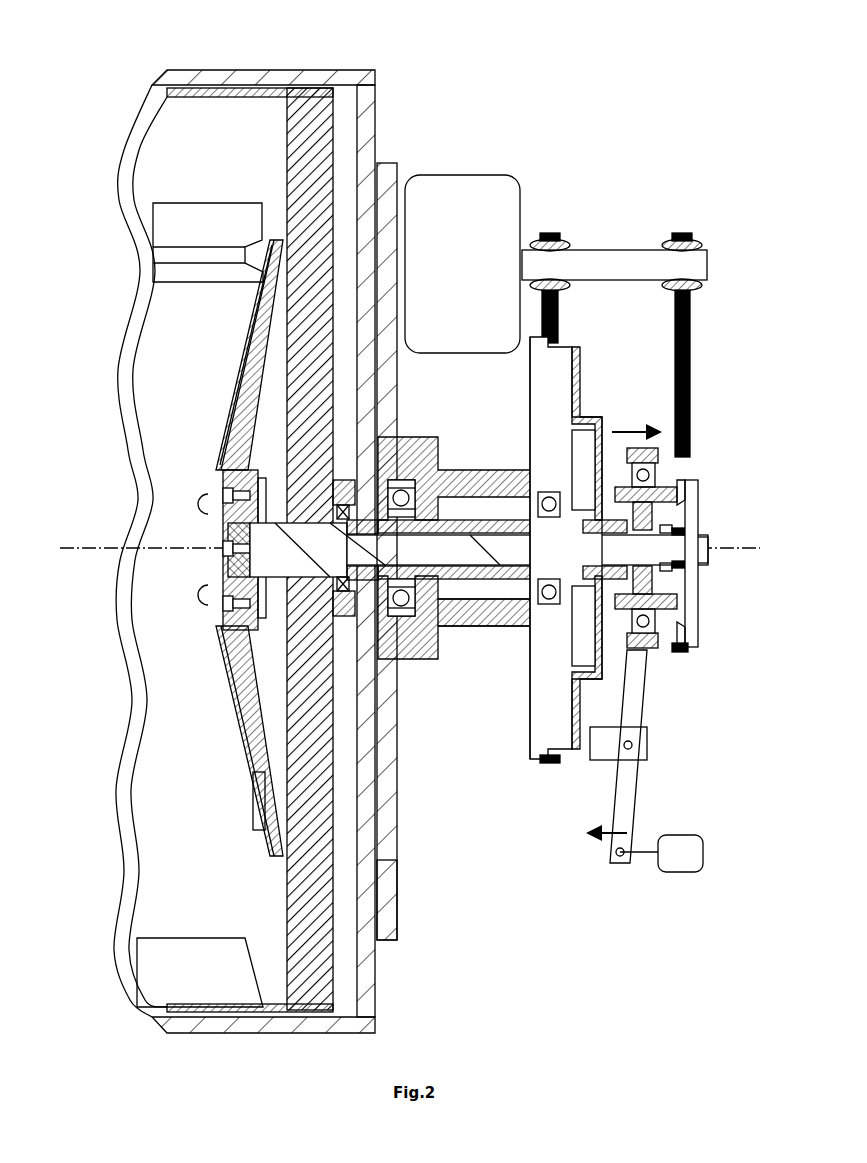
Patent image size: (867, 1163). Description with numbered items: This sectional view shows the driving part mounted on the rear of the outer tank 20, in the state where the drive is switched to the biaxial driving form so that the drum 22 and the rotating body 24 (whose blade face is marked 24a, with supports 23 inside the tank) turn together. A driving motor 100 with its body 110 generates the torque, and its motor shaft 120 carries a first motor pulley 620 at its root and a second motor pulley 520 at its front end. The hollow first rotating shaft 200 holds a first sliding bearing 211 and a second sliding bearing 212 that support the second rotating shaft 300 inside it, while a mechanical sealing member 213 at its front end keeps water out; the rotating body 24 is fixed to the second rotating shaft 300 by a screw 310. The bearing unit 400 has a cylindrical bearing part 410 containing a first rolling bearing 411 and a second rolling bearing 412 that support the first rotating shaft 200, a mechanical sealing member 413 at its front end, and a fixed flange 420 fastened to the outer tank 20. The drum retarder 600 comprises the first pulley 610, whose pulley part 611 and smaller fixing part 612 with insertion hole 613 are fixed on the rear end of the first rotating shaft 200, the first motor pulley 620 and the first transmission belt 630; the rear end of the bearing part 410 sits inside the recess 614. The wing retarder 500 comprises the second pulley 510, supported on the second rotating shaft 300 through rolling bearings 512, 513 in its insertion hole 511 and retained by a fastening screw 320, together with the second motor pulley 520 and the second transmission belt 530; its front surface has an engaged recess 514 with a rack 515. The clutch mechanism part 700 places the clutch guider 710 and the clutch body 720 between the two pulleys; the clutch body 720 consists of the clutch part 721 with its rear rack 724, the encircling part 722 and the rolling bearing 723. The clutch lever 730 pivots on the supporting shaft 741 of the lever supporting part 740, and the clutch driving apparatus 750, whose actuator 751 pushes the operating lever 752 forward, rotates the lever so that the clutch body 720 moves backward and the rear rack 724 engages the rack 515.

The outer tank 20 is at (322, 70).
The drum 22 is at (228, 88).
The support member 23 is at (212, 208).
The rotating body 24 is at (238, 345).
The blade plate 24a is at (232, 382).
The driving motor 100 is at (518, 170).
The motor 110 is at (458, 175).
The motor shaft 120 is at (612, 250).
The first rotating shaft 200 is at (285, 680).
The first sliding bearing 211 is at (343, 500).
The second sliding bearing 212 is at (522, 575).
The mechanical sealing member 213 is at (350, 500).
The second rotating shaft 300 is at (230, 625).
The screw 310 is at (222, 604).
The fastening screw 320 is at (708, 546).
The bearing unit 400 is at (390, 163).
The bearing part 410 is at (418, 448).
The first rolling bearing 411 is at (401, 608).
The second rolling bearing 412 is at (520, 635).
The mechanical sealing member 413 is at (262, 700).
The fixed flange 420 is at (398, 895).
The wing retarder 500 is at (700, 352).
The second pulley 510 is at (700, 603).
The insertion hole 511 is at (690, 520).
The rolling bearing 512 is at (667, 497).
The rolling bearing 513 is at (700, 507).
The engaged recess 514 is at (680, 588).
The rack 515 is at (690, 642).
The second motor pulley 520 is at (702, 240).
The second transmission belt 530 is at (692, 330).
The drum retarder 600 is at (530, 362).
The first pulley 610 is at (532, 720).
The pulley part 611 is at (582, 355).
The fixing part 612 is at (588, 405).
The insertion hole 613 is at (555, 520).
The recess 614 is at (548, 418).
The first motor pulley 620 is at (566, 240).
The first transmission belt 630 is at (565, 312).
The clutch mechanism part 700 is at (660, 735).
The clutch guider 710 is at (690, 485).
The clutch body 720 is at (690, 460).
The clutch part 721 is at (625, 515).
The encircling part 722 is at (604, 470).
The rolling bearing 723 is at (652, 653).
The rear rack 724 is at (675, 655).
The clutch lever 730 is at (612, 812).
The lever supporting part 740 is at (605, 760).
The supporting shaft 741 is at (638, 752).
The clutch driving apparatus 750 is at (706, 848).
The actuator 751 is at (678, 874).
The operating lever 752 is at (640, 858).